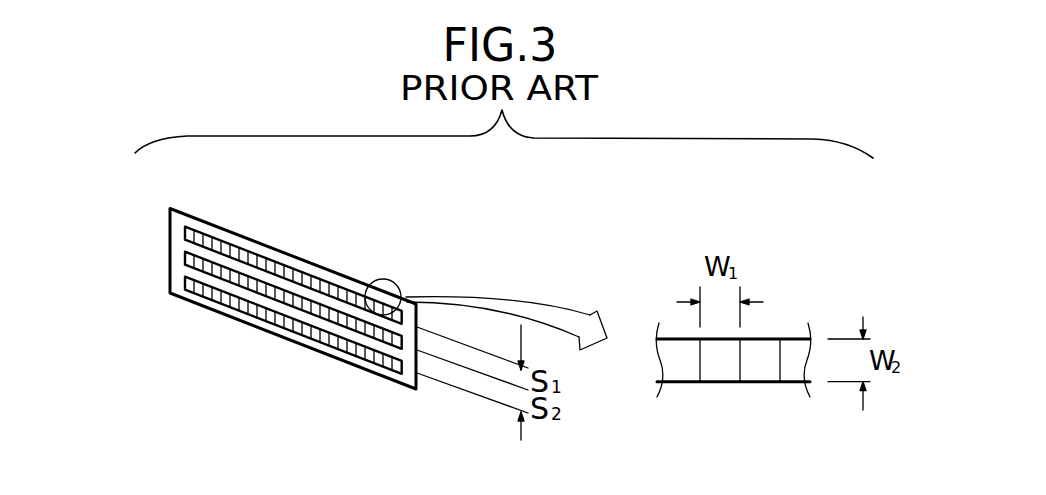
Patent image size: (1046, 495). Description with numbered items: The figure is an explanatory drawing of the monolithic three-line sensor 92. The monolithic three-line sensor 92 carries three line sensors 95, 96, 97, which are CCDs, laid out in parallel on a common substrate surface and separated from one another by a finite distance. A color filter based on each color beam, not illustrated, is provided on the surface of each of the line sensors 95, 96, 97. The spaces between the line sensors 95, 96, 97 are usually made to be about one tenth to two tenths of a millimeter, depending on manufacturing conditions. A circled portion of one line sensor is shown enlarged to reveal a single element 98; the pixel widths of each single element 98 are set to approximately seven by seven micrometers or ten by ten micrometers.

The monolithic 3-line sensor 92 is at (168, 238).
The line sensor 95 is at (208, 229).
The line sensor 96 is at (264, 282).
The line sensor 97 is at (260, 314).
The single element 98 is at (385, 280).